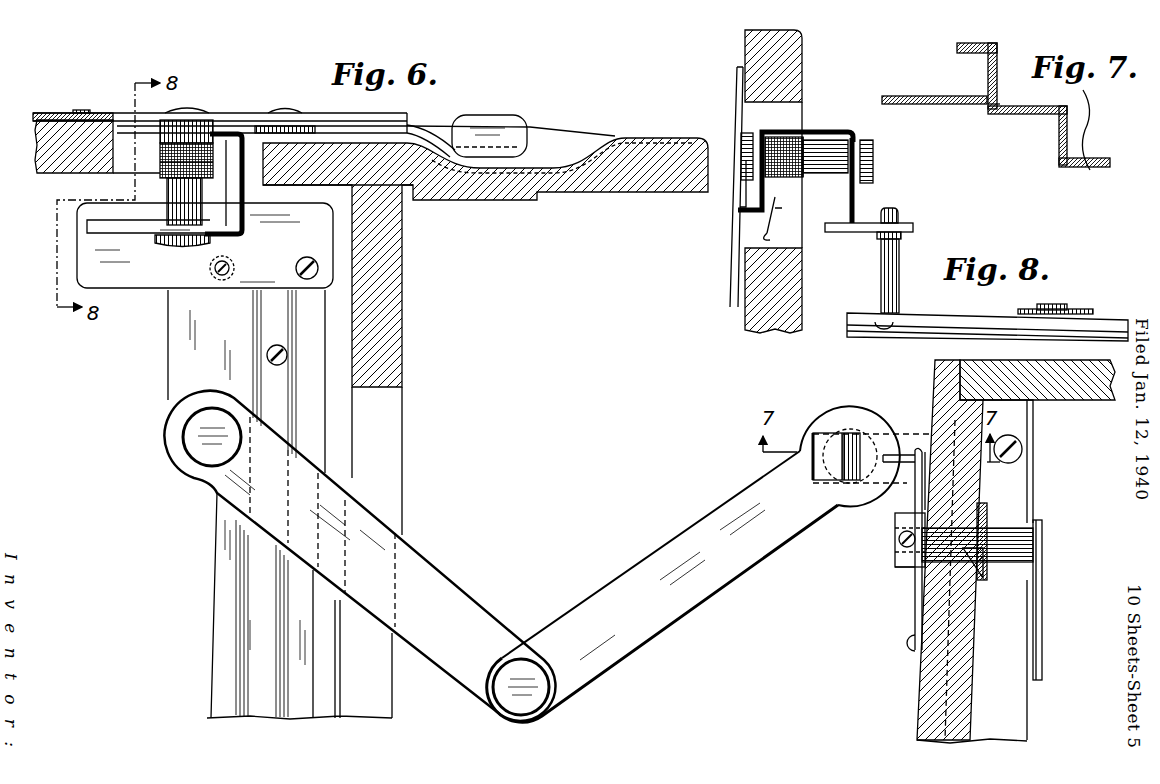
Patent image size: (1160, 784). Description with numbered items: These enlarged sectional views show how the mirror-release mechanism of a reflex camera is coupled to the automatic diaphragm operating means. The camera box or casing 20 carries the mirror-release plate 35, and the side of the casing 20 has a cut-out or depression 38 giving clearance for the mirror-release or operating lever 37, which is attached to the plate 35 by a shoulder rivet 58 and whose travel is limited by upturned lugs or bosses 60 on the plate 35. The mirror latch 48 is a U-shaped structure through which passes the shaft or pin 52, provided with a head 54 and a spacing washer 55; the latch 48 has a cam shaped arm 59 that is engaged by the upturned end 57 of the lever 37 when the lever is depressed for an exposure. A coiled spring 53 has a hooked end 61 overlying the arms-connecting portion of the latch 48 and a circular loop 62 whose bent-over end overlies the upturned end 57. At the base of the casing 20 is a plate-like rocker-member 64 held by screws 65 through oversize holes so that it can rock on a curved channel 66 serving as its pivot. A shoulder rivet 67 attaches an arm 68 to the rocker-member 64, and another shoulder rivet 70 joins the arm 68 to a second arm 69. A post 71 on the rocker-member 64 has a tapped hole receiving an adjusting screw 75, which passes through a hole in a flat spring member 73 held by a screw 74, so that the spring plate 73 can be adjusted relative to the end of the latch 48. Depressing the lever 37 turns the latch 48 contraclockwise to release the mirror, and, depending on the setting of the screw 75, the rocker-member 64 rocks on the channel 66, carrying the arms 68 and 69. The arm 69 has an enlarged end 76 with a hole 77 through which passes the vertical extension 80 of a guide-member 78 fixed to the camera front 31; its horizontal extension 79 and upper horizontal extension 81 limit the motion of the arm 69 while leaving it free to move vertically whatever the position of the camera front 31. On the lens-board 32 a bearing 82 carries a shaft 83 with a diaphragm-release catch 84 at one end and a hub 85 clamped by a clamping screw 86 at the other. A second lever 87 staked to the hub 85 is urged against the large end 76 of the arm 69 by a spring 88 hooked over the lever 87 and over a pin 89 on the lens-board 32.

In FIG. 6, the camera box or casing 20 is at (637, 139).
In FIG. 8, the camera box or casing 20 is at (802, 58).
In FIG. 8, the camera front 31 is at (1097, 401).
In FIG. 8, the lens-board 32 is at (966, 702).
In FIG. 6, the mirror-release plate 35 is at (96, 113).
In FIG. 8, the mirror-release plate 35 is at (740, 94).
In FIG. 6, the mirror-release or operating lever 37 is at (488, 124).
In FIG. 6, the cut-out or depression 38 is at (555, 143).
In FIG. 6, the mirror latch 48 is at (122, 234).
In FIG. 8, the mirror latch 48 is at (858, 204).
In FIG. 6, the shaft or pin 52 is at (167, 190).
In FIG. 8, the shaft or pin 52 is at (828, 174).
In FIG. 6, the coiled spring 53 is at (160, 164).
In FIG. 8, the coiled spring 53 is at (800, 184).
In FIG. 6, the head 54 is at (210, 239).
In FIG. 8, the head 54 is at (873, 163).
In FIG. 6, the spacing washer 55 is at (203, 122).
In FIG. 8, the spacing washer 55 is at (745, 150).
In FIG. 8, the upturned end 57 is at (757, 221).
In FIG. 6, the shoulder rivet 58 is at (286, 114).
In FIG. 8, the cam shaped arm 59 is at (755, 194).
In FIG. 6, the upturned lugs or bosses 60 is at (433, 132).
In FIG. 6, the hooked end 61 is at (238, 183).
In FIG. 8, the hooked end 61 is at (806, 133).
In FIG. 8, the circular loop 62 is at (769, 233).
In FIG. 6, the rocker-member 64 is at (223, 589).
In FIG. 8, the rocker-member 64 is at (940, 320).
In FIG. 6, the screws 65 is at (268, 349).
In FIG. 6, the curved channel 66 is at (255, 645).
In FIG. 8, the curved channel 66 is at (1080, 341).
In FIG. 6, the shoulder rivet 67 is at (184, 435).
In FIG. 8, the shoulder rivet 67 is at (1067, 309).
In FIG. 6, the arm 68 is at (215, 480).
In FIG. 8, the arm 68 is at (1103, 316).
In FIG. 6, the second arm 69 is at (612, 653).
In FIG. 7, the second arm 69 is at (917, 104).
In FIG. 6, the shoulder rivet 70 is at (525, 706).
In FIG. 6, the post 71 is at (230, 268).
In FIG. 8, the post 71 is at (899, 258).
In FIG. 6, the flat spring member 73 is at (137, 290).
In FIG. 8, the flat spring member 73 is at (863, 229).
In FIG. 6, the screw 74 is at (305, 257).
In FIG. 6, the adjusting screw 75 is at (210, 268).
In FIG. 8, the adjusting screw 75 is at (900, 215).
In FIG. 6, the enlarged end 76 is at (855, 417).
In FIG. 7, the enlarged end 76 is at (1033, 101).
In FIG. 6, the hole 77 is at (863, 447).
In FIG. 7, the hole 77 is at (980, 104).
In FIG. 7, the guide-member 78 is at (1109, 130).
In FIG. 6, the horizontal extension 79 is at (903, 483).
In FIG. 7, the horizontal extension 79 is at (1030, 114).
In FIG. 7, the vertical extension 80 is at (1000, 68).
In FIG. 6, the upper horizontal extension 81 is at (822, 440).
In FIG. 7, the upper horizontal extension 81 is at (980, 44).
In FIG. 8, the bearing 82 is at (1017, 523).
In FIG. 8, the shaft 83 is at (975, 578).
In FIG. 8, the diaphragm-release catch 84 is at (1043, 583).
In FIG. 8, the hub 85 is at (900, 565).
In FIG. 8, the clamping screw 86 is at (897, 541).
In FIG. 6, the second lever 87 is at (908, 454).
In FIG. 8, the spring 88 is at (915, 611).
In FIG. 8, the pin 89 is at (907, 651).